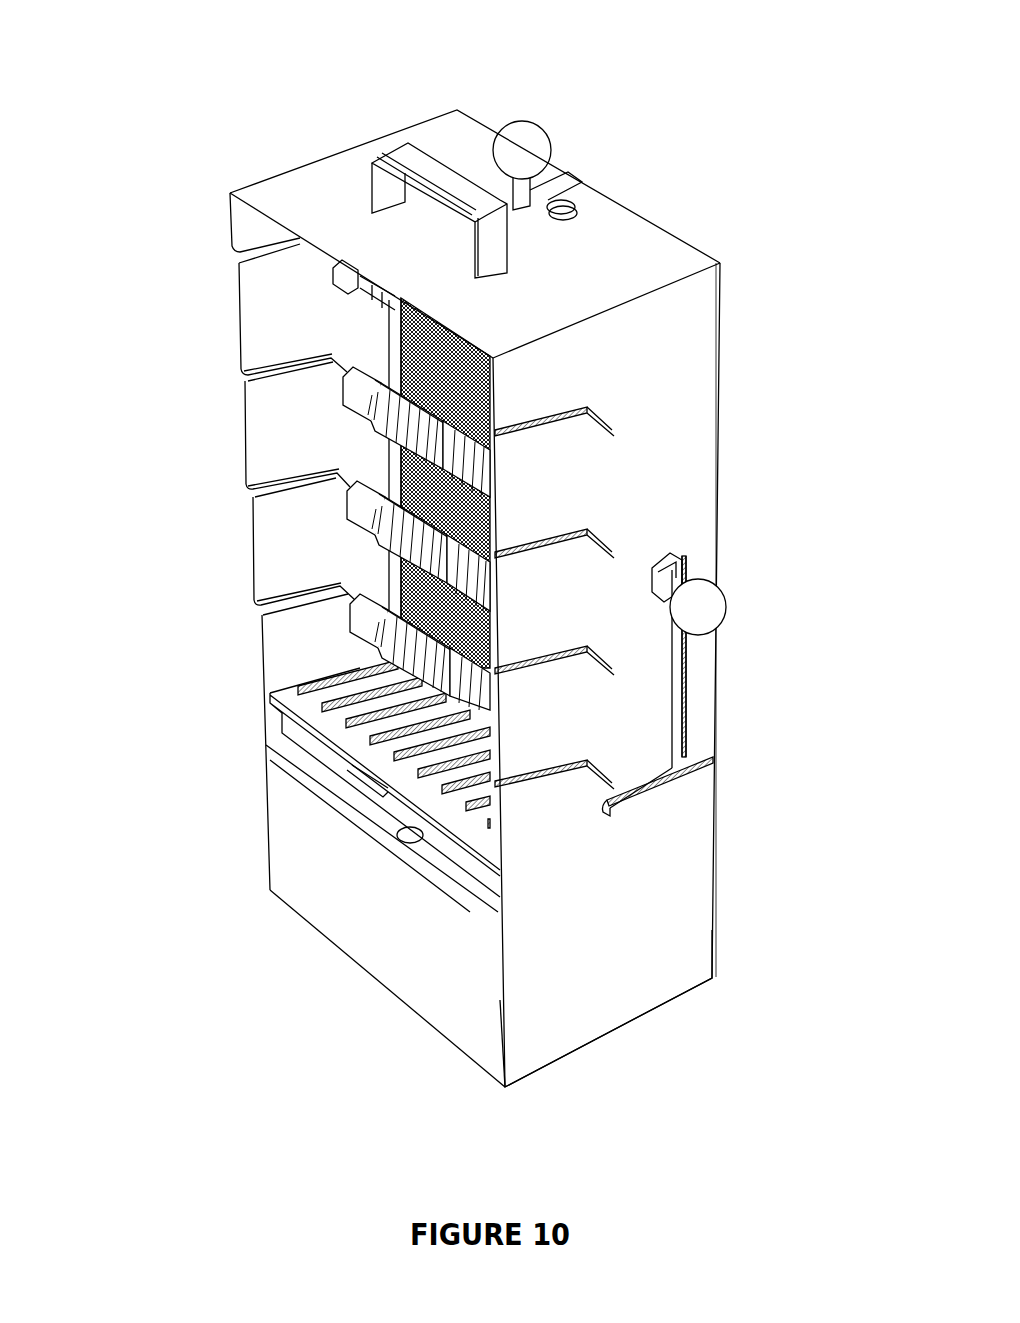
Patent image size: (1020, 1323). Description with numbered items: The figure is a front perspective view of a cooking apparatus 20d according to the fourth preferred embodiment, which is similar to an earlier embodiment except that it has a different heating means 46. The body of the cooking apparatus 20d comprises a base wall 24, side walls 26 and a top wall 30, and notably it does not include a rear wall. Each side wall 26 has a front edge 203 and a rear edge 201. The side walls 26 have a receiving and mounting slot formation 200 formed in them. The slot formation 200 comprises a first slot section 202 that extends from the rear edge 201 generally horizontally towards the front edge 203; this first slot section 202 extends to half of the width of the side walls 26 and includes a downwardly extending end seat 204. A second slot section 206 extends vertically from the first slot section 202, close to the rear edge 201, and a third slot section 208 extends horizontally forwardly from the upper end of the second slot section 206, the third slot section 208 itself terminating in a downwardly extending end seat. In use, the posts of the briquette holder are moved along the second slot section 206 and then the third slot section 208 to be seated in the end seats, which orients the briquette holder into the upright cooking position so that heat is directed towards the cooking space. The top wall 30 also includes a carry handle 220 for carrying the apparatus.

The cooking apparatus 20d is at (722, 188).
The top wall 30 is at (333, 185).
The carry handle 220 is at (450, 180).
The side walls 26 is at (268, 337).
The heating means 46 is at (420, 578).
The base wall 24 is at (423, 1015).
The receiving and mounting slot formation 200 is at (778, 697).
The rear edge 201 is at (713, 950).
The first slot section 202 is at (662, 782).
The front edge 203 is at (503, 1018).
The end seat 204 is at (608, 812).
The second slot section 206 is at (683, 680).
The third slot section 208 is at (672, 562).